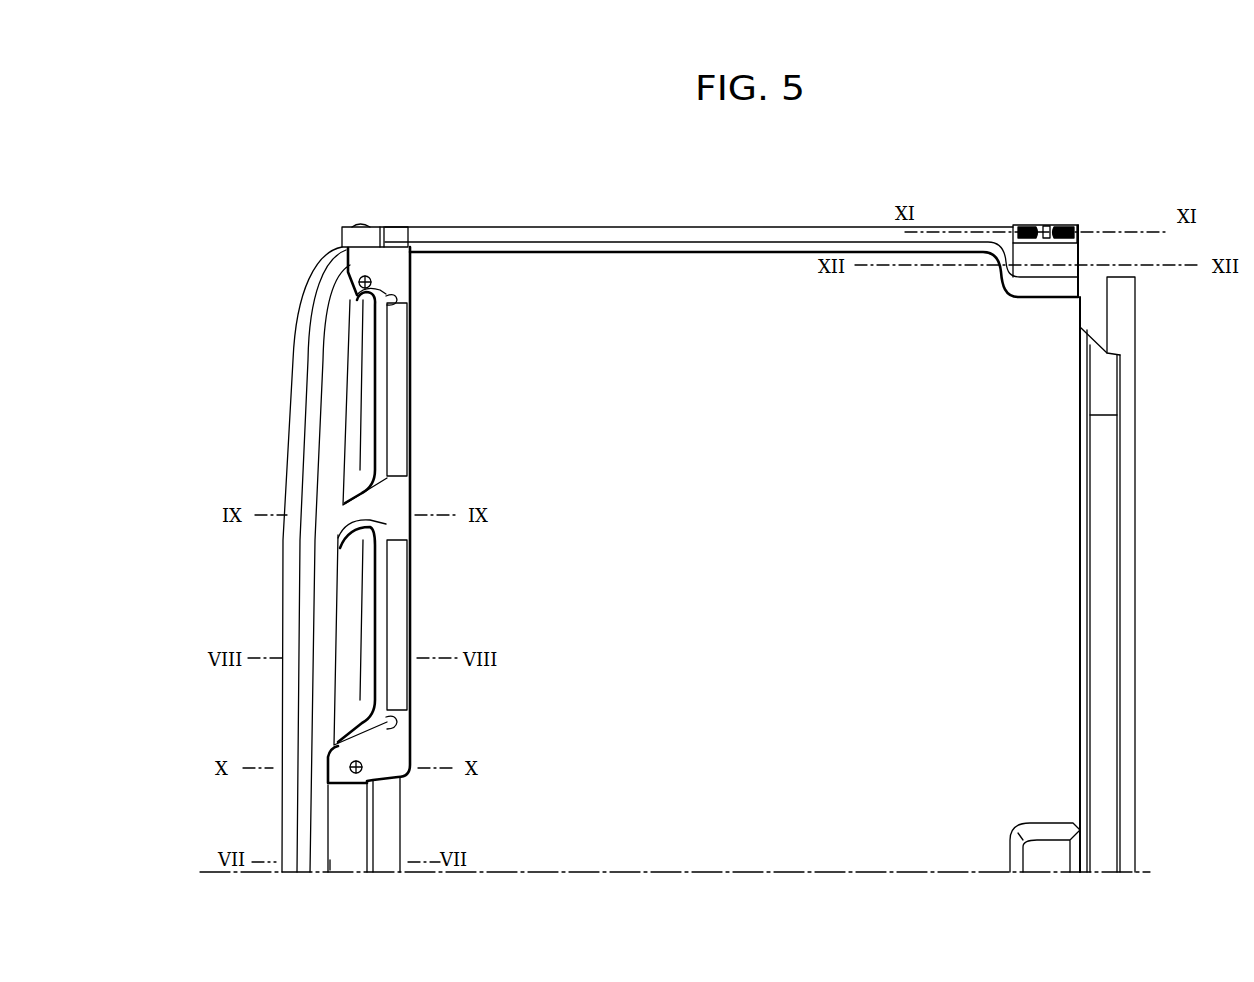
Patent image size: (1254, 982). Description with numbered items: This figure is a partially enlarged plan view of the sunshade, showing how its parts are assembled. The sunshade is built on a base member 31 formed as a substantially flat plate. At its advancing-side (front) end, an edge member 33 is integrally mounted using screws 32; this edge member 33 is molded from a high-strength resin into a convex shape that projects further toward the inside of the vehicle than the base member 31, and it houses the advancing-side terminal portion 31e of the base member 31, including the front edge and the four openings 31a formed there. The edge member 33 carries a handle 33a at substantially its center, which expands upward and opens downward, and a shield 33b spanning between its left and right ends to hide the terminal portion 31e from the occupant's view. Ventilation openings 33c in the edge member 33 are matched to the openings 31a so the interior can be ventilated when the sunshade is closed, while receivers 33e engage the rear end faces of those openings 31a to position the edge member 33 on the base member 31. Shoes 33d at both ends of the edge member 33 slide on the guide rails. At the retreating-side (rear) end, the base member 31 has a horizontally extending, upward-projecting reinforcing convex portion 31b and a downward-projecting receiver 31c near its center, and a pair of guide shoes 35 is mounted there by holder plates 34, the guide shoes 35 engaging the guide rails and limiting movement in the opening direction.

The base member 31 is at (706, 853).
The openings 31a is at (396, 300).
The reinforcing convex portion 31b is at (1090, 620).
The receiver 31c is at (1048, 848).
The advancing-side terminal portion 31e is at (322, 572).
The screws 32 is at (372, 282).
The edge member 33 is at (283, 809).
The handle 33a is at (165, 435).
The shield 33b is at (295, 388).
The ventilation openings 33c is at (366, 442).
The shoes 33d is at (365, 238).
The receivers 33e is at (400, 384).
The holder plates 34 is at (1053, 282).
The guide shoes 35 is at (1012, 240).